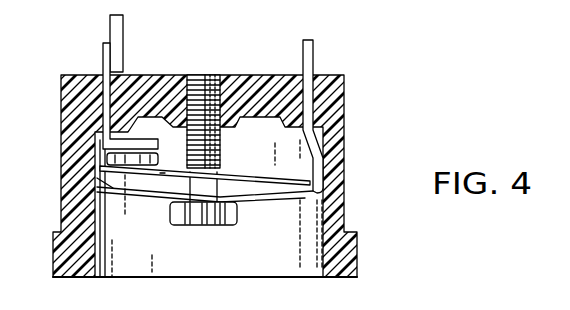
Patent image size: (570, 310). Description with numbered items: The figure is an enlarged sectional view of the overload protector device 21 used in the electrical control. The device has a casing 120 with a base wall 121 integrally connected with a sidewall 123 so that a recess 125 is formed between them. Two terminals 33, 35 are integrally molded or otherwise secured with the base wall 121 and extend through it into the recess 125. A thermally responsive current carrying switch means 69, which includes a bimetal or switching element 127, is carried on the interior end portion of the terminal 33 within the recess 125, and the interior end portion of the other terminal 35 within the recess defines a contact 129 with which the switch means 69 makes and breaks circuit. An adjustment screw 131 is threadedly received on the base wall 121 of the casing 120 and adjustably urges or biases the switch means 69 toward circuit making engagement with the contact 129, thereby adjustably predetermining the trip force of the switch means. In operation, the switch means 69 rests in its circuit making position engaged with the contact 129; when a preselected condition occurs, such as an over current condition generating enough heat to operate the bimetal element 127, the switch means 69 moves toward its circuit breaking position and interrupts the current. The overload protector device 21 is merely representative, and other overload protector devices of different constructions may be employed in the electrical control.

The overload protector device 21 is at (412, 142).
The terminal 33 is at (313, 50).
The terminal 35 is at (103, 36).
The thermally responsive current carrying switch means 69 is at (159, 179).
The casing 120 is at (347, 79).
The base wall 121 is at (250, 82).
The sidewall 123 is at (97, 190).
The recess 125 is at (112, 278).
The bimetal switching element 127 is at (238, 178).
The contact 129 is at (97, 141).
The adjustment screw 131 is at (203, 226).